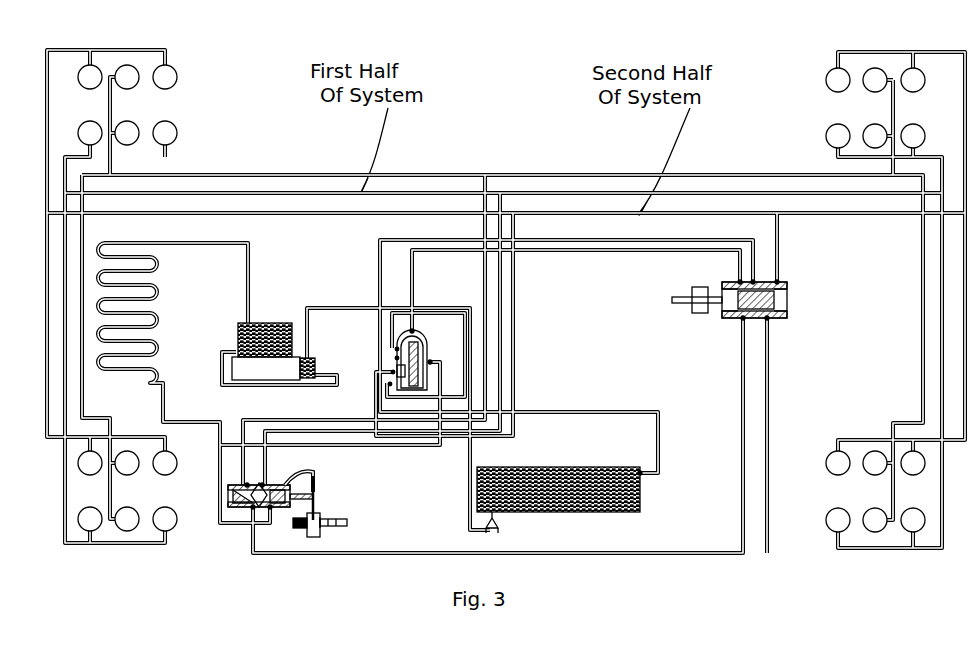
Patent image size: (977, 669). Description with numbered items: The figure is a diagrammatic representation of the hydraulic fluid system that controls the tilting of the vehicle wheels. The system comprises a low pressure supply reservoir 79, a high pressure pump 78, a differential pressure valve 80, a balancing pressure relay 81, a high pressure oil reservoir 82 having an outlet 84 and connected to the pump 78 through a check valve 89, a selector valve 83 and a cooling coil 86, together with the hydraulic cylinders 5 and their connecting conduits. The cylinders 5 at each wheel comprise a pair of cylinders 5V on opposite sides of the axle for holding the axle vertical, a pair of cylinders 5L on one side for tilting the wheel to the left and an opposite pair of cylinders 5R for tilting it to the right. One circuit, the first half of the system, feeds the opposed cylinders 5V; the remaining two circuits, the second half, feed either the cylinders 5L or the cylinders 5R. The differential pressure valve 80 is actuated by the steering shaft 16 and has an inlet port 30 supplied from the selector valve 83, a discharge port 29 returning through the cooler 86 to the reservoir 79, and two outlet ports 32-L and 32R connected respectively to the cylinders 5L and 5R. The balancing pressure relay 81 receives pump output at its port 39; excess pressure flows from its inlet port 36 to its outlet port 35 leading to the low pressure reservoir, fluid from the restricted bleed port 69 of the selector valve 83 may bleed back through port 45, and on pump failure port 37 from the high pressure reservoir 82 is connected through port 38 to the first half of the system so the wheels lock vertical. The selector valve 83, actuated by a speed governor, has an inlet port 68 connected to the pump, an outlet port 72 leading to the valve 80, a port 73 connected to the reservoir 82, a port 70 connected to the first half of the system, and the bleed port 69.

The hydraulic cylinders 5 is at (80, 468).
The cylinders for tilting to the left 5L is at (163, 70).
The cylinders for tilting to the right 5R is at (90, 126).
The cylinders for holding the axle vertical 5V is at (127, 89).
The steering shaft 16 is at (345, 522).
The discharge port 29 is at (272, 510).
The inlet port 30 is at (253, 510).
The outlet port 32R is at (247, 483).
The outlet port 32-L is at (296, 476).
The outlet port 35 is at (431, 363).
The inlet port 36 is at (396, 348).
The port 37 is at (392, 372).
The port 38 is at (389, 384).
The port 39 is at (413, 329).
The port 45 is at (396, 357).
The inlet port 68 is at (739, 281).
The bleed port 69 is at (755, 281).
The port 70 is at (779, 281).
The outlet port 72 is at (742, 319).
The port 73 is at (768, 320).
The high pressure pump 78 is at (273, 368).
The low pressure supply reservoir 79 is at (238, 340).
The differential pressure valve 80 is at (317, 502).
The balancing pressure relay 81 is at (424, 344).
The high pressure oil reservoir 82 is at (568, 467).
The selector valve 83 is at (790, 304).
The outlet 84 is at (642, 476).
The cooling coil 86 is at (150, 312).
The check valve 89 is at (498, 524).